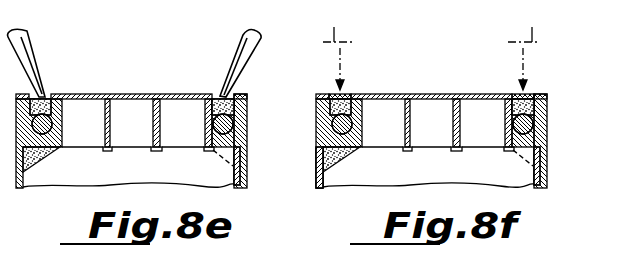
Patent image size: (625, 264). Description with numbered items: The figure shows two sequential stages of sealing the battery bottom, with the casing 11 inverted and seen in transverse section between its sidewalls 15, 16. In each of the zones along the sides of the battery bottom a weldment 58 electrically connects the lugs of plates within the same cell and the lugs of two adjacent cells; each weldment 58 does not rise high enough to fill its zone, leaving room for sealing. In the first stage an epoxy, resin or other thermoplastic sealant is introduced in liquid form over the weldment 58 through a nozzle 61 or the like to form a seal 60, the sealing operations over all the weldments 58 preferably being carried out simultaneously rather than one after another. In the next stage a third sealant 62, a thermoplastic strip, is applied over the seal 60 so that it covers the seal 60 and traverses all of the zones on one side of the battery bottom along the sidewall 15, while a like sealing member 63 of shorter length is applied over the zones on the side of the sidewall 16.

In FIG. 8E, the casing 11 is at (249, 162).
In FIG. 8F, the sidewall 15 is at (316, 161).
In FIG. 8F, the sidewall 16 is at (541, 165).
In FIG. 8E, the weldment 58 is at (63, 110).
In FIG. 8F, the weldment 58 is at (362, 127).
In FIG. 8E, the seal 60 is at (53, 117).
In FIG. 8F, the seal 60 is at (353, 100).
In FIG. 8E, the nozzle 61 is at (24, 50).
In FIG. 8F, the third sealant 62 is at (334, 25).
In FIG. 8F, the sealing member 63 is at (531, 27).